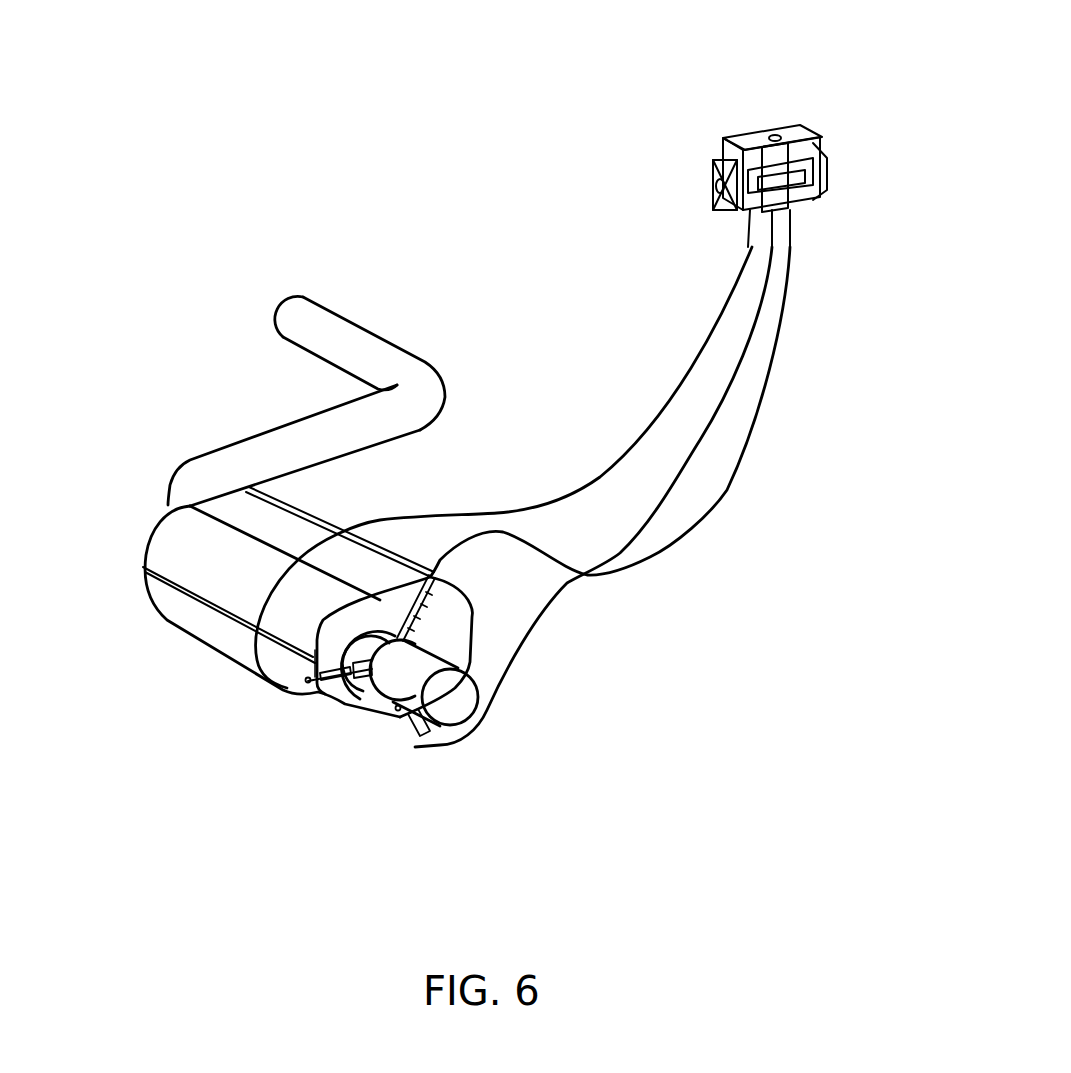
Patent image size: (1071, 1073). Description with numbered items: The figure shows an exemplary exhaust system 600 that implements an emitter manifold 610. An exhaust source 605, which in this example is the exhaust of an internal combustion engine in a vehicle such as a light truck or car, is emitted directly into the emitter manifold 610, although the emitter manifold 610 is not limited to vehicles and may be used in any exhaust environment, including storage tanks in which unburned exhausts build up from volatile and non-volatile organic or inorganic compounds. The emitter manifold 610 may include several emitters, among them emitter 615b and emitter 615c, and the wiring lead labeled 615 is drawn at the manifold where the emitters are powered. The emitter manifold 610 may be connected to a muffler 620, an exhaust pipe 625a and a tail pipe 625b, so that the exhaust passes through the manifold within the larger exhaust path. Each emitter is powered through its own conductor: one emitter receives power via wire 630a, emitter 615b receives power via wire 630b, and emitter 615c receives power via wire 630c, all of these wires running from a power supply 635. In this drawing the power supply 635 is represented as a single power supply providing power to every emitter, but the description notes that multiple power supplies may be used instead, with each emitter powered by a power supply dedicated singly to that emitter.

The exhaust system 600 is at (163, 246).
The exhaust source 605 is at (451, 708).
The emitter manifold 610 is at (337, 697).
The lead wire 615 is at (327, 690).
The emitter 615b is at (418, 732).
The emitter 615c is at (403, 640).
The muffler 620 is at (177, 613).
The exhaust pipe 625a is at (250, 438).
The tail pipe 625b is at (285, 300).
The wire 630a is at (597, 476).
The wire 630b is at (677, 487).
The wire 630c is at (750, 447).
The power supply 635 is at (723, 138).